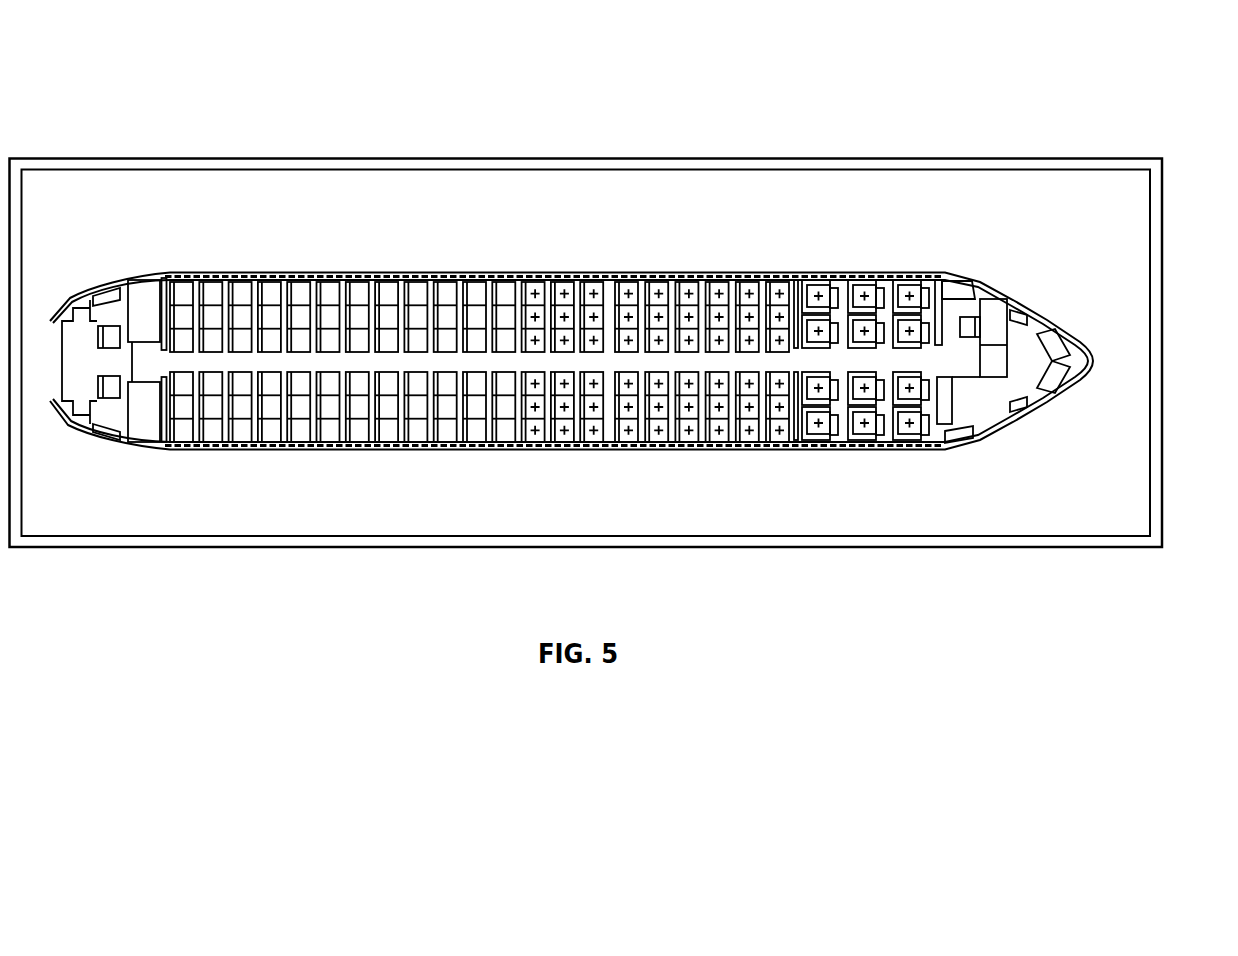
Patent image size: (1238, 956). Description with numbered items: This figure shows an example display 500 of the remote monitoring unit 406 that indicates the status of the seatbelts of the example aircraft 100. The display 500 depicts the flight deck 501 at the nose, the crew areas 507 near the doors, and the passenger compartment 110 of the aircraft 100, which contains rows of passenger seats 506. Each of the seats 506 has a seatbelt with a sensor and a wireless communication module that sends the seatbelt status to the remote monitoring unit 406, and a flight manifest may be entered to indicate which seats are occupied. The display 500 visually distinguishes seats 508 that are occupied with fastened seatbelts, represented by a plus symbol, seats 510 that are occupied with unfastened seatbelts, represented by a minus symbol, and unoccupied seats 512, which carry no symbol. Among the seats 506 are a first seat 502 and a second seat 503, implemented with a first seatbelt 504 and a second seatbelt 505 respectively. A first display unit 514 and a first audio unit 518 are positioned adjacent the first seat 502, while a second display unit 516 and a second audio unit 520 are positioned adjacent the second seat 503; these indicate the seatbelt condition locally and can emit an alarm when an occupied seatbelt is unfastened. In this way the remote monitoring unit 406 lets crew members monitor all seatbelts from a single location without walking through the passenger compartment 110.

The aircraft 100 is at (1033, 457).
The passenger compartment 110 is at (960, 463).
The remote monitoring unit 406 is at (1162, 510).
The display 500 is at (1155, 152).
The flight deck 501 is at (1037, 345).
The first seat 502 is at (724, 442).
The second seat 503 is at (939, 264).
The first seatbelt 504 is at (724, 442).
The second seatbelt 505 is at (939, 264).
The passenger seats 506 is at (505, 430).
The crew areas 507 is at (110, 297).
The occupied seats with fastened seatbelts 508 is at (635, 293).
The occupied seats with unfastened seatbelts 510 is at (783, 293).
The unoccupied seats 512 is at (332, 288).
The first display unit 514 is at (724, 442).
The second display unit 516 is at (939, 264).
The first audio unit 518 is at (655, 430).
The second audio unit 520 is at (862, 325).